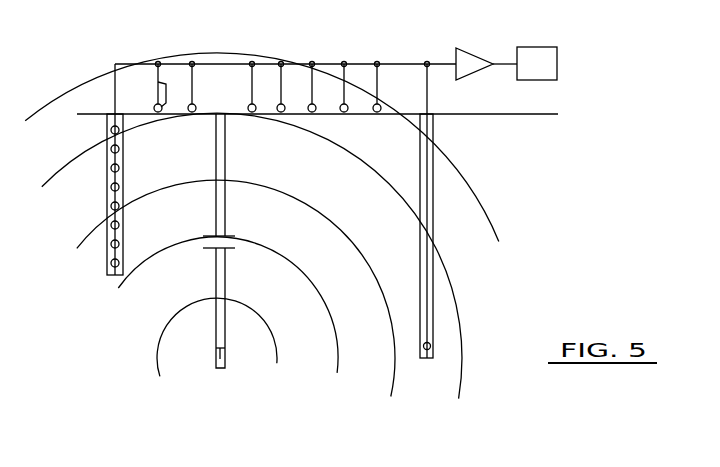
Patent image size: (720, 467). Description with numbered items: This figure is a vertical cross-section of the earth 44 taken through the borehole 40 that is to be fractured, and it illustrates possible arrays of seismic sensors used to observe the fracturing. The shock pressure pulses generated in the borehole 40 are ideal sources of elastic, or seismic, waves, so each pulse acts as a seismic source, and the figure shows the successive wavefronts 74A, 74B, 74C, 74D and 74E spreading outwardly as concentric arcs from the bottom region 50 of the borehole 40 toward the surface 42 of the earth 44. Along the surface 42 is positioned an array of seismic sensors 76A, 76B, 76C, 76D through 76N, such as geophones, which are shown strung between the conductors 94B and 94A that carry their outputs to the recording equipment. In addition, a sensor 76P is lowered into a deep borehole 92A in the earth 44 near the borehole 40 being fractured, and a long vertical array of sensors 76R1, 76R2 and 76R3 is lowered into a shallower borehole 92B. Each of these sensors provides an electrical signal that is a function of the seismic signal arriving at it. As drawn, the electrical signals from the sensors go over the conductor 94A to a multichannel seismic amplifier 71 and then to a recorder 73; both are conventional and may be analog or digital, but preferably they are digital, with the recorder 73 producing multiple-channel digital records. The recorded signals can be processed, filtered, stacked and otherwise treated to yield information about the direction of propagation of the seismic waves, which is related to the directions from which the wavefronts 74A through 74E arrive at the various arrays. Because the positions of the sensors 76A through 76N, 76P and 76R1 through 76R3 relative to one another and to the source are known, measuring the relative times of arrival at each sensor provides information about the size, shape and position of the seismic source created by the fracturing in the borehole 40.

The borehole 40 is at (238, 256).
The surface of the earth 42 is at (506, 114).
The earth medium 44 is at (538, 201).
The antenna feed point 50 is at (213, 357).
The multichannel seismic amplifier 71 is at (483, 22).
The recorder 73 is at (527, 47).
The wavefront 74A is at (274, 325).
The wavefront 74B is at (340, 343).
The wavefront 74C is at (400, 364).
The wavefront 74D is at (458, 358).
The wavefront 74E is at (446, 160).
The seismic sensor 76A is at (167, 83).
The seismic sensor 76B is at (198, 105).
The seismic sensor 76C is at (252, 112).
The seismic sensor 76D is at (283, 102).
The seismic sensor 76N is at (381, 105).
The seismic sensor 76P is at (431, 346).
The seismic sensor 76R1 is at (119, 264).
The seismic sensor 76R2 is at (120, 246).
The seismic sensor 76R3 is at (119, 223).
The deep borehole 92A is at (466, 236).
The shallower borehole 92B is at (121, 207).
The bus conductor 94A is at (427, 97).
The bus conductor 94B is at (115, 85).